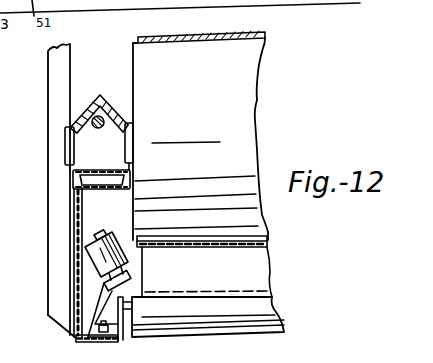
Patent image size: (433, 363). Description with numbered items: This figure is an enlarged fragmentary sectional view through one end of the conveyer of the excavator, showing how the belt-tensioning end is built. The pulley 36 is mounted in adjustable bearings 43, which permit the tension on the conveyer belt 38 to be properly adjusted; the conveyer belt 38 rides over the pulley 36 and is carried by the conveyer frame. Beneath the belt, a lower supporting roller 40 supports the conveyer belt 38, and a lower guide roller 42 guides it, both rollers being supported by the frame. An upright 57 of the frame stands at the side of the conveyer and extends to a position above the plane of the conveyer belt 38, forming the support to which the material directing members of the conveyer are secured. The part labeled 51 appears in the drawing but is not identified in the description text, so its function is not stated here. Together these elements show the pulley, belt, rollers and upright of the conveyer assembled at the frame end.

The pulley 36 is at (247, 74).
The conveyer belt 38 is at (257, 38).
The lower supporting roller 40 is at (281, 311).
The lower guide roller 42 is at (118, 231).
The adjustable bearings 43 is at (111, 128).
The liner column 51 is at (72, 321).
The uprights 57 is at (60, 275).